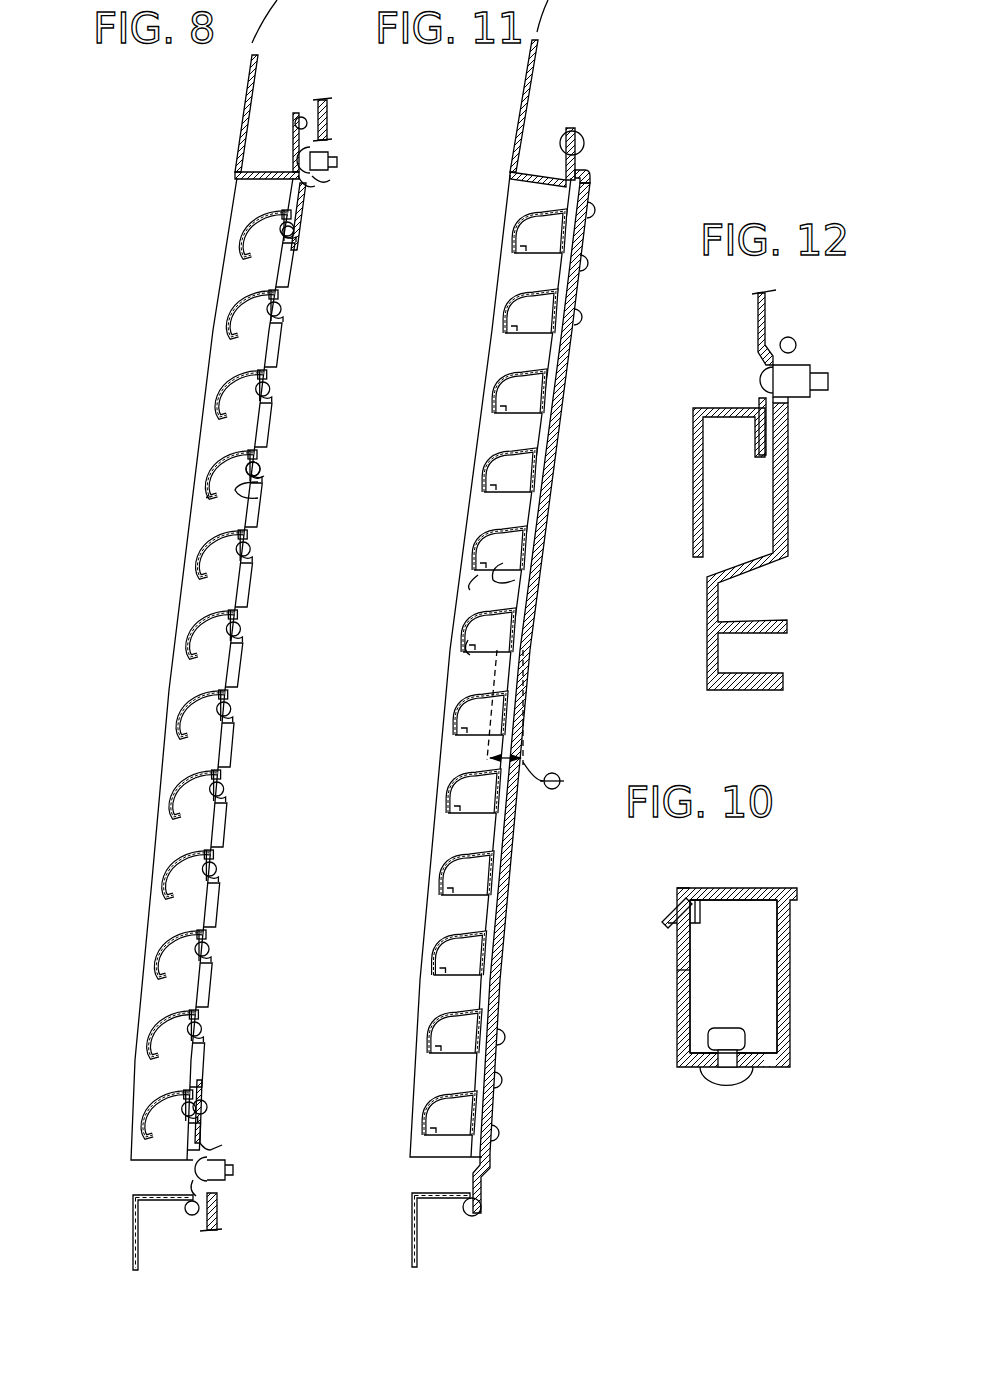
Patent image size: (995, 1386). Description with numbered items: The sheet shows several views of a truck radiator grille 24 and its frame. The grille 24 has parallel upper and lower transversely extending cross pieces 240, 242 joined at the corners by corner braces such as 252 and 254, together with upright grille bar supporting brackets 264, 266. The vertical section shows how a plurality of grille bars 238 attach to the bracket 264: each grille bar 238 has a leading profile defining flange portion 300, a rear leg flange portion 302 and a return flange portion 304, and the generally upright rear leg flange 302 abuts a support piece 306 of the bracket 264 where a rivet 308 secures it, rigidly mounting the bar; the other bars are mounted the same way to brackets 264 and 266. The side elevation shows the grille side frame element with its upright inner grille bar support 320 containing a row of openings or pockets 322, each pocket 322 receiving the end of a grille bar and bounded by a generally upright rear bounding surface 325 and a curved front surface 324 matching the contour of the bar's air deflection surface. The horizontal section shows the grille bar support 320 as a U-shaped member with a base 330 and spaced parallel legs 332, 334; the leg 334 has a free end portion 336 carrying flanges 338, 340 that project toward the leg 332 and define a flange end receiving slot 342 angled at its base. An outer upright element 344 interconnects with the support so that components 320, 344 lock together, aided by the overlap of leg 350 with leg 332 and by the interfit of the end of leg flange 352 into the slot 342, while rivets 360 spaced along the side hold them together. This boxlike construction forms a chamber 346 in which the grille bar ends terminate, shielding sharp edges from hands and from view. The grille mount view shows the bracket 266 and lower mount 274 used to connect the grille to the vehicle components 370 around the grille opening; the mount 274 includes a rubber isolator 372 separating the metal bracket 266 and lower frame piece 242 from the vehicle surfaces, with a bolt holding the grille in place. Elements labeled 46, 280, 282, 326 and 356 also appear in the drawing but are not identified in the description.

In FIG. 8, the grille 24 is at (137, 215).
In FIG. 11, the grille 24 is at (412, 805).
In FIG. 11, the heat exchanger strip 46 is at (530, 353).
In FIG. 10, the heat exchanger strip 46 is at (812, 928).
In FIG. 8, the grille bars 238 is at (242, 230).
In FIG. 11, the grille bars 238 is at (525, 230).
In FIG. 8, the upper cross piece 240 is at (250, 103).
In FIG. 11, the upper cross piece 240 is at (522, 110).
In FIG. 8, the lower cross piece 242 is at (134, 1218).
In FIG. 11, the lower cross piece 242 is at (413, 1235).
In FIG. 12, the lower cross piece 242 is at (693, 490).
In FIG. 11, the corner brace 252 is at (586, 235).
In FIG. 11, the corner brace 254 is at (492, 1160).
In FIG. 8, the bracket 264 is at (306, 203).
In FIG. 12, the bracket 266 is at (772, 320).
In FIG. 12, the lower mount 274 is at (800, 365).
In FIG. 8, the edge flange segments 280 is at (290, 265).
In FIG. 8, the openings between fins 282 is at (245, 272).
In FIG. 8, the leading profile defining flange portion 300 is at (258, 450).
In FIG. 11, the leading profile defining flange portion 300 is at (497, 530).
In FIG. 8, the rear leg flange portion 302 is at (244, 492).
In FIG. 11, the rear leg flange portion 302 is at (477, 553).
In FIG. 8, the return flange portion 304 is at (212, 494).
In FIG. 11, the return flange portion 304 is at (473, 578).
In FIG. 8, the support piece 306 is at (265, 461).
In FIG. 8, the rivet 308 is at (262, 472).
In FIG. 11, the inner grille bar support 320 is at (502, 268).
In FIG. 10, the inner grille bar support 320 is at (792, 1005).
In FIG. 11, the pockets 322 is at (522, 488).
In FIG. 11, the curved front surface 324 is at (504, 570).
In FIG. 11, the rear bounding surface 325 is at (458, 786).
In FIG. 11, the clip 326 is at (466, 632).
In FIG. 10, the base 330 is at (791, 1035).
In FIG. 10, the leg 332 is at (764, 1070).
In FIG. 10, the leg 334 is at (740, 890).
In FIG. 10, the free end portion 336 is at (664, 926).
In FIG. 10, the flange 338 is at (666, 918).
In FIG. 10, the flange 340 is at (700, 905).
In FIG. 10, the flange end receiving slot 342 is at (680, 905).
In FIG. 10, the outer upright element 344 is at (677, 1000).
In FIG. 10, the chamber 346 is at (747, 972).
In FIG. 10, the leg 350 is at (705, 1030).
In FIG. 10, the leg flange 352 is at (673, 968).
In FIG. 10, the slot 356 is at (697, 1067).
In FIG. 10, the rivets 360 is at (725, 1088).
In FIG. 12, the vehicle components 370 is at (790, 510).
In FIG. 12, the isolator 372 is at (792, 400).